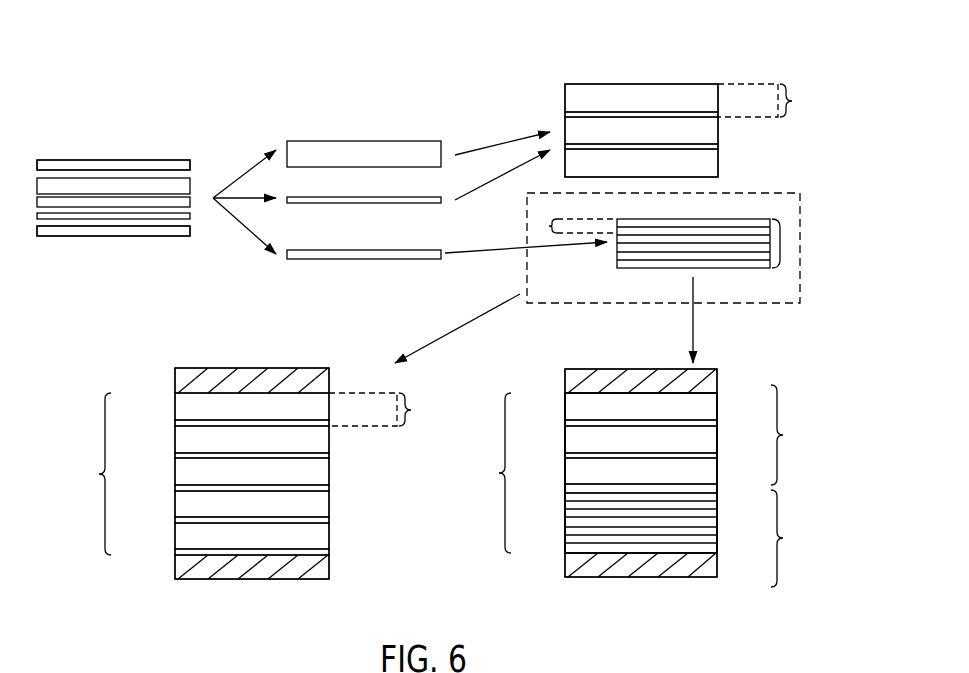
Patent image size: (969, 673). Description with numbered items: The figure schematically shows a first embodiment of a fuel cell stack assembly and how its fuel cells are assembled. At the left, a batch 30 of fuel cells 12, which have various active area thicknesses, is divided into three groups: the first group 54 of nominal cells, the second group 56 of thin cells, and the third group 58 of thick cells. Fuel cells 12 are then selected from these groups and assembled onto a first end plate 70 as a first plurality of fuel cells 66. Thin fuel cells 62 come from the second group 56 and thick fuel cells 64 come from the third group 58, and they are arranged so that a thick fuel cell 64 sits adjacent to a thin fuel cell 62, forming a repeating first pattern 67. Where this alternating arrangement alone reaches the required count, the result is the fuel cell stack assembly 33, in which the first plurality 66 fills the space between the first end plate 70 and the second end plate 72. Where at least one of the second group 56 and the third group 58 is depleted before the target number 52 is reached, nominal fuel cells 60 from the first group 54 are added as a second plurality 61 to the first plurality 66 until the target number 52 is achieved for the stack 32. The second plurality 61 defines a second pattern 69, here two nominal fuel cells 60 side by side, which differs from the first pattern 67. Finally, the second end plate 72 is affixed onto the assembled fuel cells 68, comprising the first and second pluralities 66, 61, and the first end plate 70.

The batch of fuel cells 30 is at (85, 142).
The fuel cells 12 is at (191, 186).
The third group 58 is at (419, 141).
The second group 56 is at (419, 197).
The first group 54 is at (419, 250).
The first plurality of fuel cells 66 is at (560, 71).
The thick fuel cell 64 is at (565, 163).
The thin fuel cell 62 is at (718, 147).
The first pattern 67 is at (572, 255).
The second pattern 69 is at (574, 228).
The nominal fuel cell 60 is at (617, 238).
The second plurality of fuel cells 61 is at (780, 243).
The fuel cell stack assembly 33 is at (168, 352).
The fuel cell stack 32 is at (548, 380).
The second end plate 72 is at (329, 380).
The first end plate 70 is at (329, 565).
The assembled fuel cells 68 is at (584, 473).
The target number of fuel cells 52 is at (584, 473).